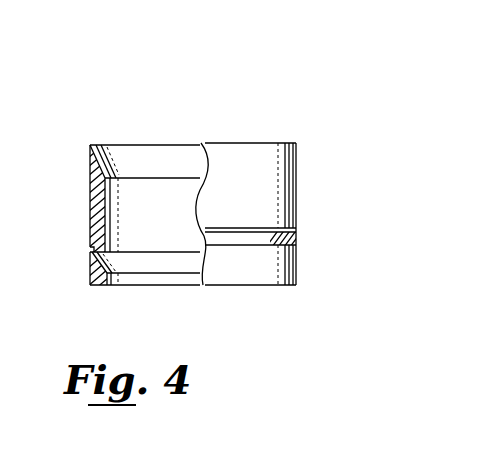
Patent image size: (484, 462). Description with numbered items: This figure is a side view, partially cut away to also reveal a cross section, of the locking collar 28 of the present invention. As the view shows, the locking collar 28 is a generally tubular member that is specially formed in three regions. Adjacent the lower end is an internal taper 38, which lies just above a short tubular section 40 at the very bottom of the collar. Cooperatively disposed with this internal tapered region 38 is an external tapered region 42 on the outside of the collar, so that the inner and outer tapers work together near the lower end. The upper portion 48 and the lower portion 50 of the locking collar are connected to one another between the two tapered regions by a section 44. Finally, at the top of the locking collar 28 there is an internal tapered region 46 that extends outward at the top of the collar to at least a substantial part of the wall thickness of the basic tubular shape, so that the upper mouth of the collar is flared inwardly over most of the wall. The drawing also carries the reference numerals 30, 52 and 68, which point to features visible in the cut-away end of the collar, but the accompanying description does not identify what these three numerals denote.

The coupling assembly 30 is at (9, 83).
The internal tapered region 46 is at (148, 153).
The chamfer 68 is at (97, 180).
The locking collar 28 is at (70, 201).
The external tapered region 42 is at (93, 242).
The section 44 is at (88, 253).
The lower portion 50 is at (93, 277).
The internal taper 38 is at (96, 281).
The short tubular section 40 is at (173, 288).
The bore 52 is at (105, 213).
The upper portion 48 is at (278, 190).